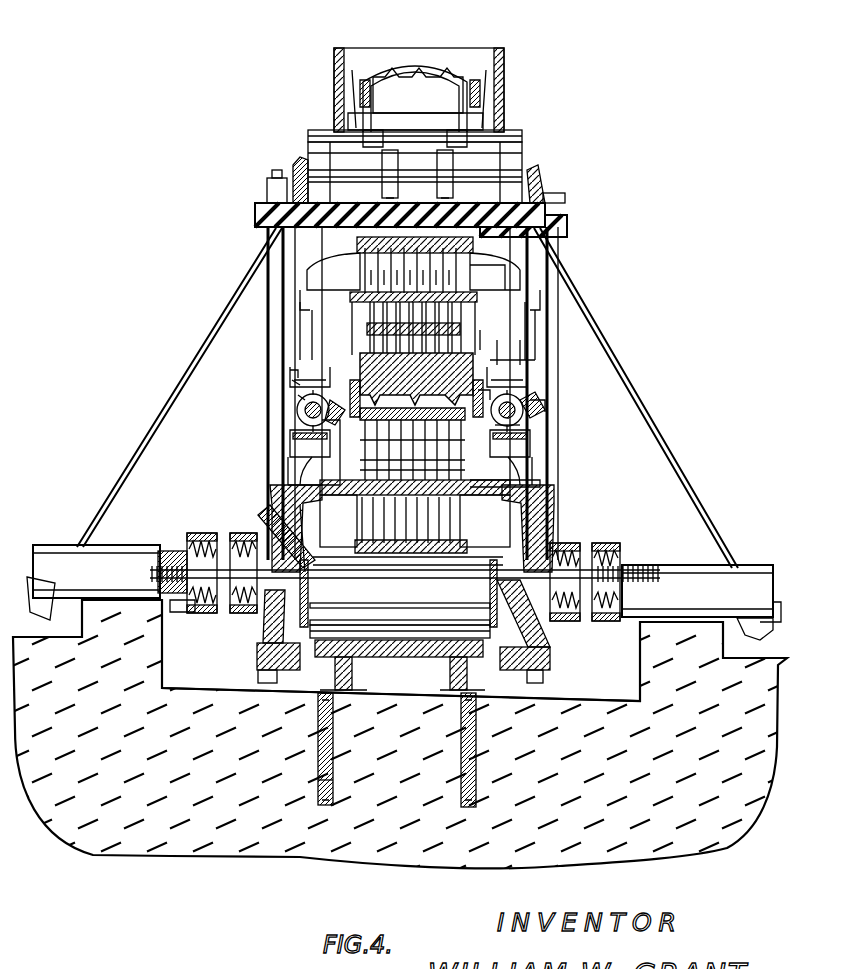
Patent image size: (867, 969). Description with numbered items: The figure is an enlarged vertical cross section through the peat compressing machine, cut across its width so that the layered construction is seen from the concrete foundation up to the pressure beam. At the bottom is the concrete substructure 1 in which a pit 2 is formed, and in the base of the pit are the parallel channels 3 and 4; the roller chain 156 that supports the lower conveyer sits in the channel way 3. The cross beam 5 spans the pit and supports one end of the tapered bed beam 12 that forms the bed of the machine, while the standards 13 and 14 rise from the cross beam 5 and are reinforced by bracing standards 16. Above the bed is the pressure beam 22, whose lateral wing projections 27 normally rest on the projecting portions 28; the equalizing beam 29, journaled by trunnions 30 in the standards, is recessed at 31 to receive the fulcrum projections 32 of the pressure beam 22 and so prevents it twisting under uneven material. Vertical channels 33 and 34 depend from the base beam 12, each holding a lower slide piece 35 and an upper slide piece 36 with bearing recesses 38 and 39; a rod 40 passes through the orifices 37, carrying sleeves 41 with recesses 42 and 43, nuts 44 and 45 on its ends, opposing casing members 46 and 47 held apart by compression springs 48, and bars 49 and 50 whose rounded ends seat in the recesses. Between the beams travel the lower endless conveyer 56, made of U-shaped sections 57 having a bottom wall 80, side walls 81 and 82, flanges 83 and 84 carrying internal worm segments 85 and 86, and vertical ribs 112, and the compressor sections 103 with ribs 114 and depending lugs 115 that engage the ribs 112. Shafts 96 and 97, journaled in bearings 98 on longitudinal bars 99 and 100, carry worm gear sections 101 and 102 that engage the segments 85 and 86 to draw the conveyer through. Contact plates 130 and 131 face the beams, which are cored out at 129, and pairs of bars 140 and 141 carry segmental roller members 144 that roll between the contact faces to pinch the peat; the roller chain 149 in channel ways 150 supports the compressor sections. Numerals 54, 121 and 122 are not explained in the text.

The substructure 1 is at (253, 843).
The pit 2 is at (401, 650).
The channel 3 is at (317, 800).
The channel 4 is at (467, 807).
The cross beam 5 is at (93, 582).
The beam 12 is at (554, 508).
The standard 13 is at (312, 330).
The standard 14 is at (515, 342).
The bracing standard 16 is at (123, 457).
The pressure beam 22 is at (480, 272).
The wing projection 27 is at (598, 268).
The projecting portion 28 is at (302, 300).
The equalizing beam 29 is at (548, 192).
The trunnion 30 is at (540, 181).
The recess 31 is at (552, 213).
The fulcrum projection 32 is at (555, 205).
The vertical channel 33 is at (415, 513).
The vertical channel 34 is at (485, 527).
The slide piece 35 is at (255, 665).
The slide piece 36 is at (283, 500).
The orifice 37 is at (400, 612).
The bearing recess 38 is at (400, 678).
The bearing recess 39 is at (284, 492).
The rod 40 is at (400, 615).
The sleeve 41 is at (318, 598).
The bearing recess 42 is at (162, 650).
The bearing recess 43 is at (262, 612).
The nut 44 is at (172, 548).
The nut 45 is at (640, 568).
The casing member 46 is at (195, 540).
The casing member 47 is at (222, 535).
The compression spring 48 is at (203, 530).
The bar 49 is at (200, 605).
The bar 50 is at (262, 640).
The post 54 is at (276, 263).
The lower endless conveyer 56 is at (498, 395).
The section 57 is at (389, 555).
The bottom wall 80 is at (530, 456).
The side wall 81 is at (497, 363).
The side wall 82 is at (401, 328).
The flange 83 is at (520, 440).
The flange 84 is at (325, 425).
The internal worm segment 85 is at (523, 428).
The internal worm segment 86 is at (297, 408).
The shaft 96 is at (545, 415).
The shaft 97 is at (408, 372).
The bearing 98 is at (295, 383).
The longitudinal bar 99 is at (293, 375).
The longitudinal bar 100 is at (290, 448).
The worm gear section 101 is at (300, 398).
The worm gear section 102 is at (555, 405).
The compressor section 103 is at (419, 375).
The vertical rib 112 is at (505, 352).
The rib 114 is at (530, 318).
The lug 115 is at (528, 352).
The bolt 121 is at (458, 162).
The housing 122 is at (433, 78).
The cored-out space 129 is at (389, 525).
The contact plate 130 is at (500, 487).
The contact plate 131 is at (490, 280).
The bar 140 is at (452, 455).
The bar 141 is at (430, 470).
The segmental roller member 144 is at (374, 320).
The endless roller chain 149 is at (482, 153).
The channel way 150 is at (318, 136).
The roller chain 156 is at (320, 777).